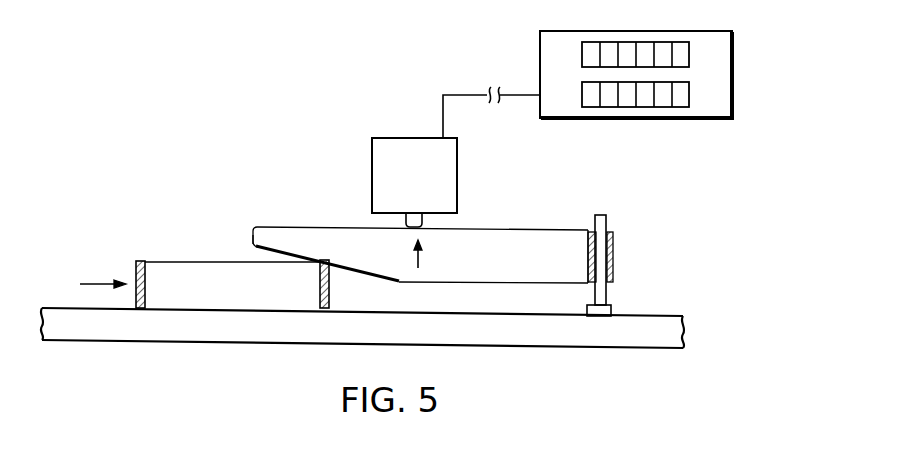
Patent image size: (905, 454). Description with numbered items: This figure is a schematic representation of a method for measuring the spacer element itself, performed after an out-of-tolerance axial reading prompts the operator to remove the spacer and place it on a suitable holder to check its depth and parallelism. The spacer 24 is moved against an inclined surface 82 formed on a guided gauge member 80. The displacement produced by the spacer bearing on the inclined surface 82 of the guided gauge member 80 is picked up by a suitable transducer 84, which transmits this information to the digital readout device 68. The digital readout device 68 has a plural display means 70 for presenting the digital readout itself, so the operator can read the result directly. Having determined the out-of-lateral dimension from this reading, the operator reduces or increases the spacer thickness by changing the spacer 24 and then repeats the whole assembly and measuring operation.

The spacer 24 is at (137, 276).
The guided gauge member 80 is at (326, 234).
The inclined surface 82 is at (262, 250).
The transducer 84 is at (426, 180).
The digital readout device 68 is at (660, 60).
The plural display means 70 is at (688, 91).